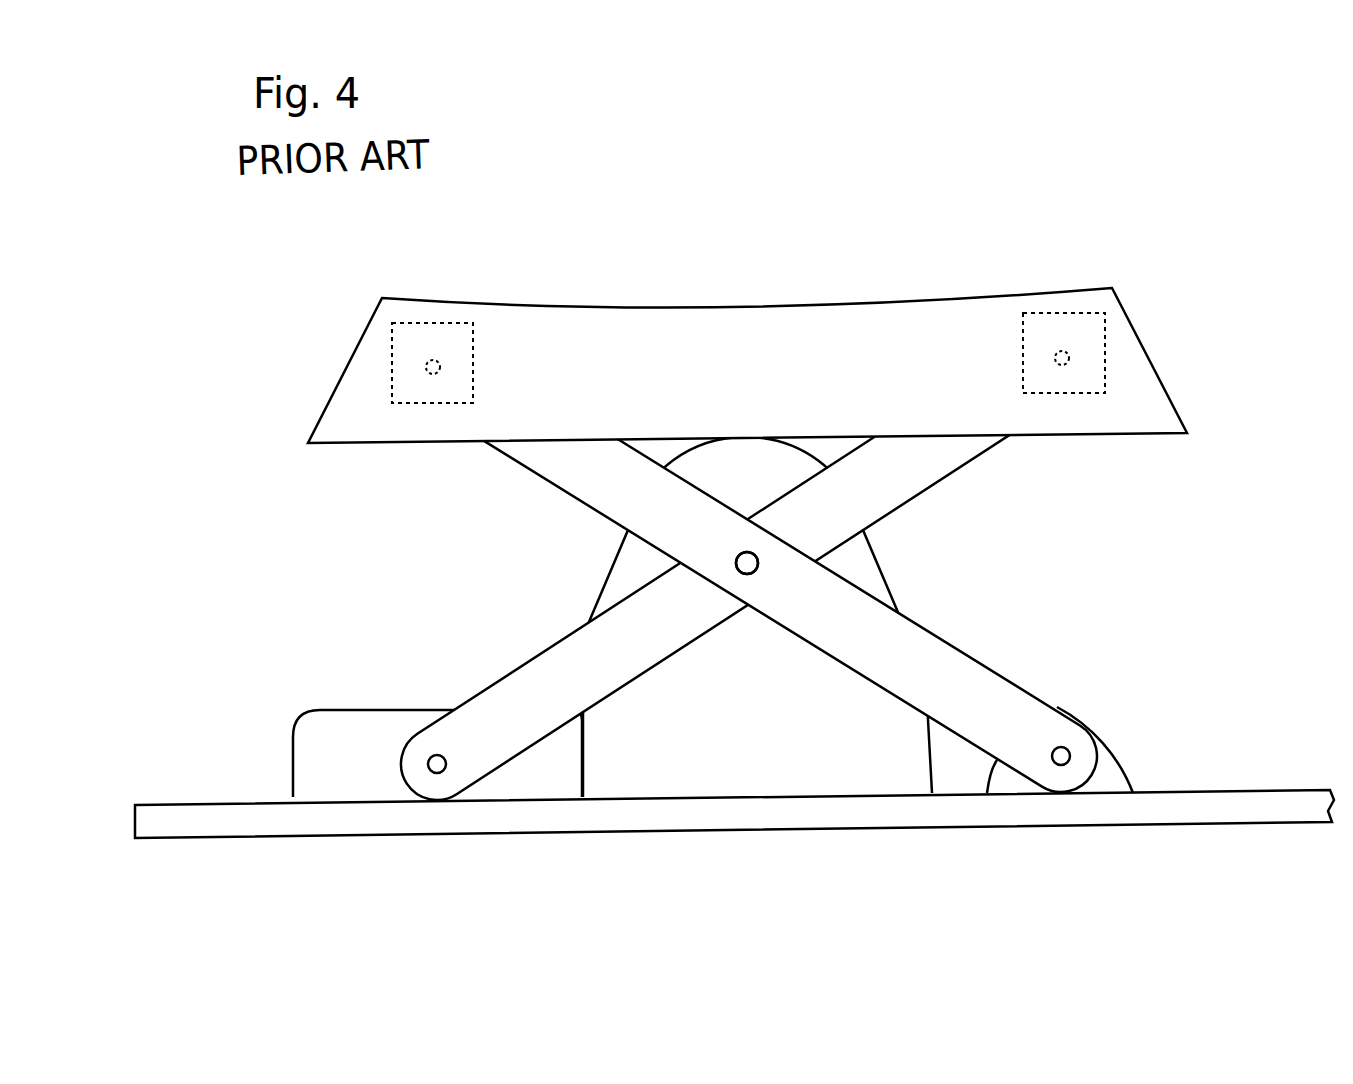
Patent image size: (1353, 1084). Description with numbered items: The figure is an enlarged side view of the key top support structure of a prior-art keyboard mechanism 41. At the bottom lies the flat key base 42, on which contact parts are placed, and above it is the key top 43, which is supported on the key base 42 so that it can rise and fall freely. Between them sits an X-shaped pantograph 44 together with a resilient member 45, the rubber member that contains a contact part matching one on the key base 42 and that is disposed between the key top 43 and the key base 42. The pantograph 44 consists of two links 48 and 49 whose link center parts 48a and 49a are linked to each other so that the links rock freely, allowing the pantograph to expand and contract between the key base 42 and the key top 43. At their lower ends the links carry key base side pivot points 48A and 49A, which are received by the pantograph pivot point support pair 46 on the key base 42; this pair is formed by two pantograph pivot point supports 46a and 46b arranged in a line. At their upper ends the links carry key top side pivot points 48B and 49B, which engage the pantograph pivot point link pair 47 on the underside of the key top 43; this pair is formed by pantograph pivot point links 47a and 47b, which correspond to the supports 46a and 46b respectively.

The keyboard mechanism 41 is at (1015, 942).
The key base 42 is at (691, 828).
The key top 43 is at (1080, 282).
The pantograph 44 is at (762, 561).
The resilient member 45 is at (623, 569).
The pantograph pivot point support pair 46 is at (786, 737).
The pantograph pivot point support 46a is at (540, 801).
The pantograph pivot point support 46b is at (950, 730).
The pantograph pivot point link pair 47 is at (748, 253).
The pantograph pivot point link 47a is at (465, 332).
The pantograph pivot point link 47b is at (1040, 313).
The link 48 is at (557, 673).
The key base side pivot point 48A is at (433, 760).
The key top side pivot point 48B is at (1067, 353).
The link center part 48a is at (757, 553).
The link 49 is at (977, 690).
The key base side pivot point 49A is at (1069, 753).
The key top side pivot point 49B is at (427, 371).
The link center part 49a is at (931, 526).